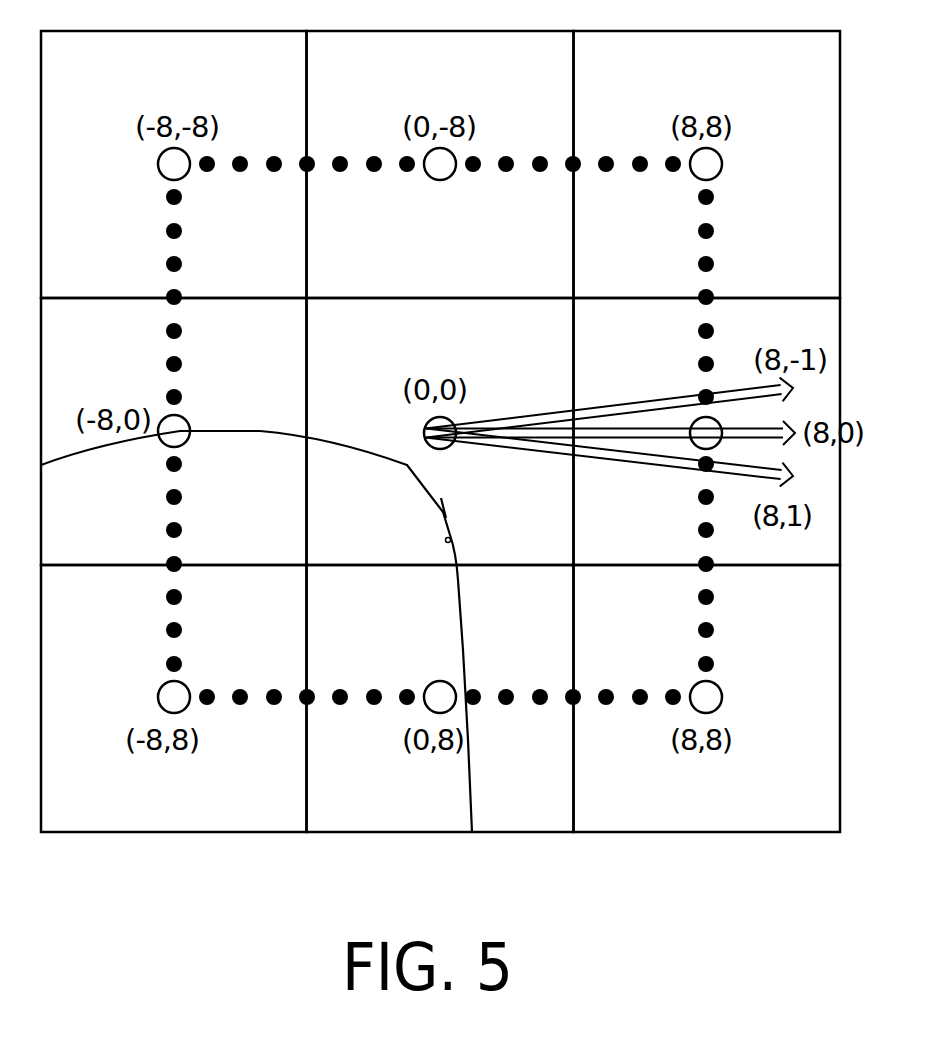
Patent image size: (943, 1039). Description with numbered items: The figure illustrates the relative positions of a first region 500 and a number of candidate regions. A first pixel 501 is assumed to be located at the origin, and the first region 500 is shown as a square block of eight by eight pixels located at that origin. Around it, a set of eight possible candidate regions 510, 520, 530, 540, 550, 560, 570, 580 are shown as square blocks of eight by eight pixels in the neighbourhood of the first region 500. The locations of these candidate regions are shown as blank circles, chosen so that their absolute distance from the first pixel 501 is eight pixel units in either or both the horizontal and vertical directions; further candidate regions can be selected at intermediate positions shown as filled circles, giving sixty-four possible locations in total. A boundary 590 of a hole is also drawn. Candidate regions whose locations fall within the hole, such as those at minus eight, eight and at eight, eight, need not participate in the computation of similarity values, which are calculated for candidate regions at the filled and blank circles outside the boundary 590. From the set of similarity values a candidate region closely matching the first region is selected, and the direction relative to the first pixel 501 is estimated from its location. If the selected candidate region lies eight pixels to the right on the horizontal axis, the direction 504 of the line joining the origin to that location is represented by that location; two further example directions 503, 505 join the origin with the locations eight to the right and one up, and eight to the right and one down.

The first region 500 is at (555, 340).
The candidate region 510 is at (107, 72).
The candidate region 520 is at (460, 72).
The candidate region 530 is at (822, 72).
The candidate region 540 is at (821, 335).
The candidate region 550 is at (823, 815).
The candidate region 560 is at (556, 815).
The candidate region 570 is at (107, 815).
The candidate region 580 is at (107, 340).
The first pixel 501 is at (426, 432).
The direction 503 is at (665, 398).
The direction 504 is at (670, 438).
The direction 505 is at (617, 458).
The boundary 590 is at (460, 612).